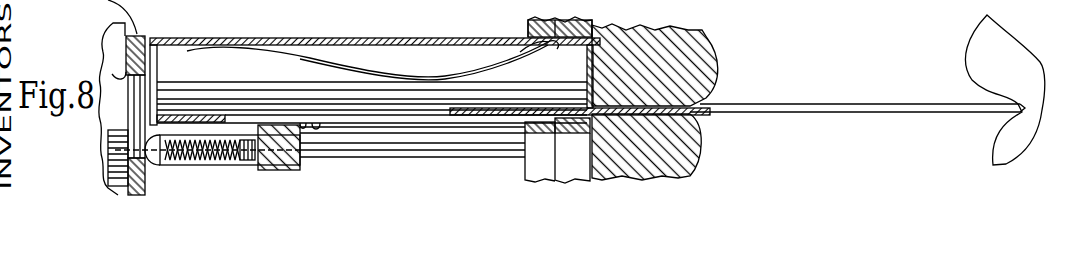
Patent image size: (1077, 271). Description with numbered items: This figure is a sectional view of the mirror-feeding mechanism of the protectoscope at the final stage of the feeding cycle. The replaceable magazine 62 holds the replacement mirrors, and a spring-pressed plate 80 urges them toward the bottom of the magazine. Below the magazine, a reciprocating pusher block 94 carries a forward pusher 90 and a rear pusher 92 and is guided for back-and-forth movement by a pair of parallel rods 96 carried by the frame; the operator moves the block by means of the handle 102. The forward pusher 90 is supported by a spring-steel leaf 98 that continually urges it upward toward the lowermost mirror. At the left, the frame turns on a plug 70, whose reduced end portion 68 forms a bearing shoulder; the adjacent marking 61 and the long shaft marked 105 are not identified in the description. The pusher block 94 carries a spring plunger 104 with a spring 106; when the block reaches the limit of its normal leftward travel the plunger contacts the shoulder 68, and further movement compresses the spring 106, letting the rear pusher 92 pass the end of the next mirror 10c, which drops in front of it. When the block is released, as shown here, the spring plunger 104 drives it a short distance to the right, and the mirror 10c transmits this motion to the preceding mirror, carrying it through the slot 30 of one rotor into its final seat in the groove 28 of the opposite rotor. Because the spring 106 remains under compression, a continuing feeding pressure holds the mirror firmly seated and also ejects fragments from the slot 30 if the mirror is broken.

The plug 70 is at (112, 37).
The opening 61 is at (115, 67).
The rear pusher 92 is at (157, 117).
The reduced end portion 68 is at (120, 142).
The spring plunger 104 is at (126, 185).
The magazine 62 is at (313, 38).
The spring-pressed plate 80 is at (236, 82).
The spring-steel leaf 98 is at (305, 122).
The next mirror 10c is at (488, 118).
The pusher block 94 is at (305, 157).
The forward pusher 90 is at (363, 118).
The parallel rods 96 is at (425, 143).
The handle 102 is at (282, 185).
The spring 106 is at (285, 160).
The slot 30 is at (700, 100).
The shaft 105 is at (882, 102).
The groove 28 is at (1030, 62).